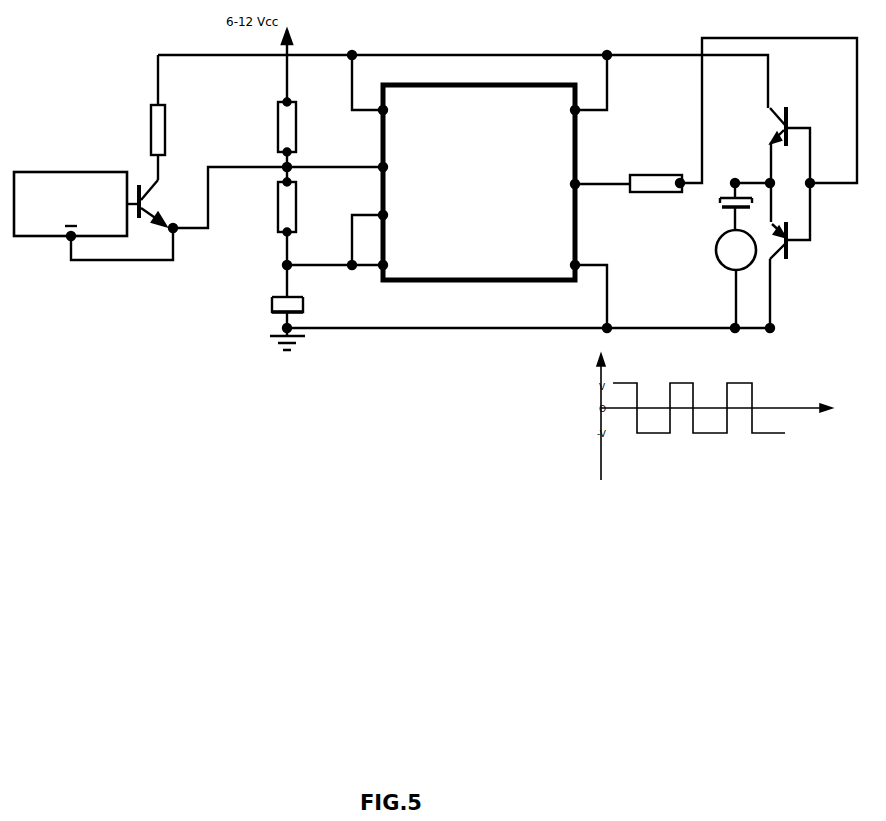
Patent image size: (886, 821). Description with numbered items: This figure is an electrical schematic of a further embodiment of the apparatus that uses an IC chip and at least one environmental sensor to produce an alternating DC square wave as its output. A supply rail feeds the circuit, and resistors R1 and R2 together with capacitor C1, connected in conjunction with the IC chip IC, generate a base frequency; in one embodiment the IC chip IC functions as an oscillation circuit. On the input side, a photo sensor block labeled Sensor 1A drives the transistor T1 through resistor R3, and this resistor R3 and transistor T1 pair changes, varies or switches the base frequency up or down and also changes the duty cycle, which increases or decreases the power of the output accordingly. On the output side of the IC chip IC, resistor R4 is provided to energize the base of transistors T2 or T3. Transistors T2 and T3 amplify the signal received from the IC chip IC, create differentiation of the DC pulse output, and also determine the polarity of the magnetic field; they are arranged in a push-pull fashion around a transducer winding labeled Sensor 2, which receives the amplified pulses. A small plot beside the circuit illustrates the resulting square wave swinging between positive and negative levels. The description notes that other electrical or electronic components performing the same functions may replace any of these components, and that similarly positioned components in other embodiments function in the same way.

The resistor R1 is at (272, 141).
The resistor R2 is at (272, 238).
The resistor R3 is at (141, 117).
The resistor R4 is at (716, 115).
The capacitor C1 is at (270, 323).
The transistor T1 is at (261, 209).
The transistor T2 is at (790, 140).
The transistor T3 is at (790, 257).
The IC chip IC is at (479, 182).
The photo sensor 1A is at (93, 216).
The transducer sensor 2 (coil) 2 is at (707, 255).